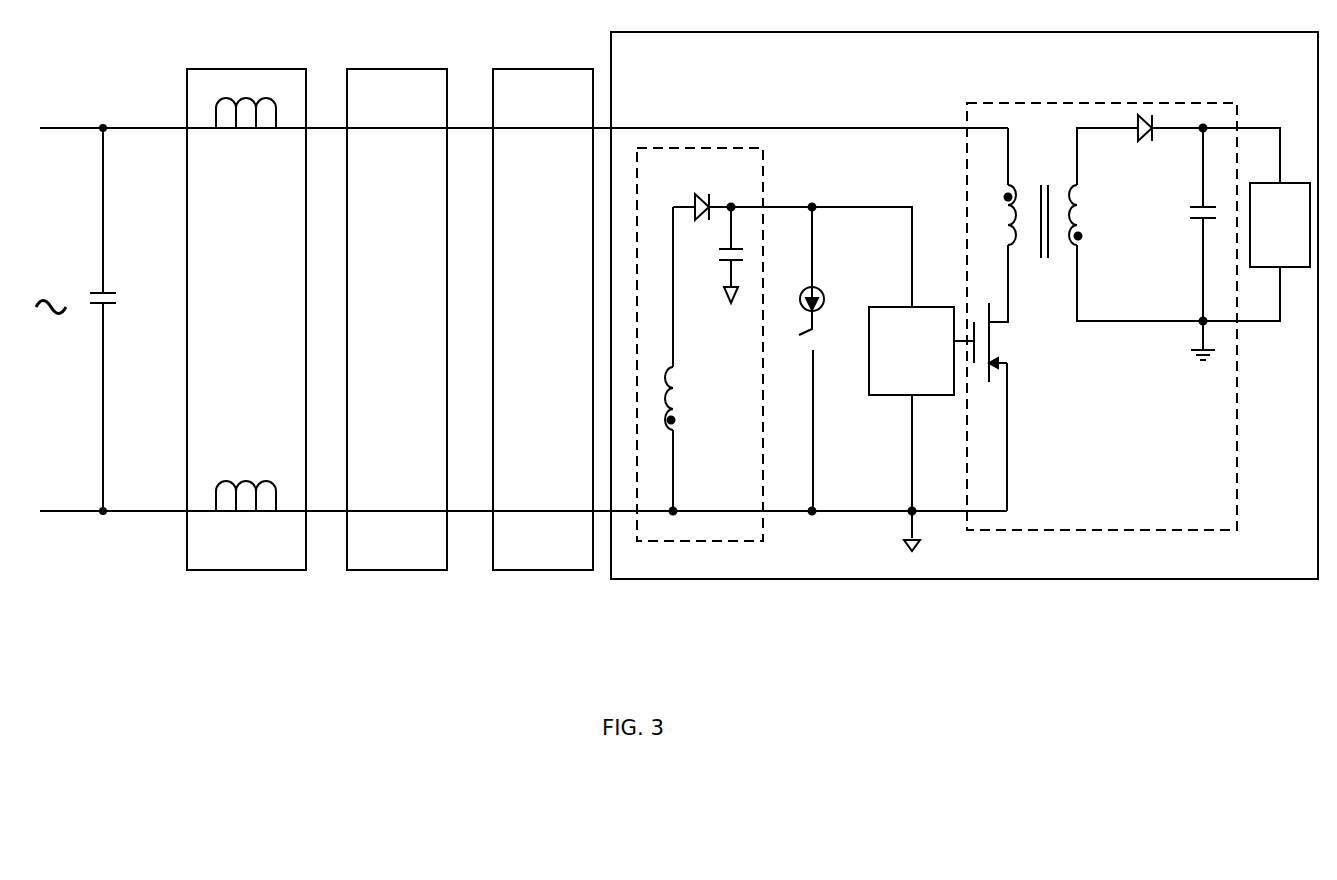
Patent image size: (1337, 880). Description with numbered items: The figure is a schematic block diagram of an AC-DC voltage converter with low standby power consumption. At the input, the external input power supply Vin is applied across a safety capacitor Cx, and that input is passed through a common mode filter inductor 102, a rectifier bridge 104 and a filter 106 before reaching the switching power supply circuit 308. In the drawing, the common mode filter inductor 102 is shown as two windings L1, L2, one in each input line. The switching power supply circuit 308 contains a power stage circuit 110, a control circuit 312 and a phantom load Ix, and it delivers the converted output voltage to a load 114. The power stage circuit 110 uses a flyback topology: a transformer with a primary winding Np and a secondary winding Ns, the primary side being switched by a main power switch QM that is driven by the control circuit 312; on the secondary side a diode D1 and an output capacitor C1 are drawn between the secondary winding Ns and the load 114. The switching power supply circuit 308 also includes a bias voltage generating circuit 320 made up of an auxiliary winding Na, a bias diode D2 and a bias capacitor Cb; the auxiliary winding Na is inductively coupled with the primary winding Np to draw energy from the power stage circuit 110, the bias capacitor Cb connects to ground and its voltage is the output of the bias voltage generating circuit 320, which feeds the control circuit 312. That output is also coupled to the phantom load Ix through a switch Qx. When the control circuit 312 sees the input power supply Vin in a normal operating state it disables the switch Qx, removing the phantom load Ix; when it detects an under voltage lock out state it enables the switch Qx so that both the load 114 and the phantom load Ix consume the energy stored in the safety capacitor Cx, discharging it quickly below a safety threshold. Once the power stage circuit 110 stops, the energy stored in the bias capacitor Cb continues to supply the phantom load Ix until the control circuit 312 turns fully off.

The common mode filter inductor 102 is at (246, 319).
The rectifier bridge 104 is at (379, 361).
The filter 106 is at (530, 347).
The switching power supply circuit 308 is at (766, 96).
The bias voltage generating circuit 320 is at (720, 394).
The control circuit 312 is at (894, 392).
The power stage circuit 110 is at (1130, 370).
The load 114 is at (1262, 250).
The input power supply Vin is at (51, 290).
The safety capacitor Cx is at (118, 319).
The first inductor L1 is at (246, 131).
The second inductor L2 is at (246, 482).
The bias diode D2 is at (702, 194).
The bias capacitor Cb is at (716, 255).
The auxiliary winding Na is at (688, 398).
The phantom load Ix is at (825, 259).
The switch Qx is at (822, 411).
The primary winding Np is at (1000, 215).
The secondary winding Ns is at (1093, 215).
The main power switch QM is at (1000, 342).
The output diode D1 is at (1146, 145).
The output capacitor C1 is at (1189, 244).